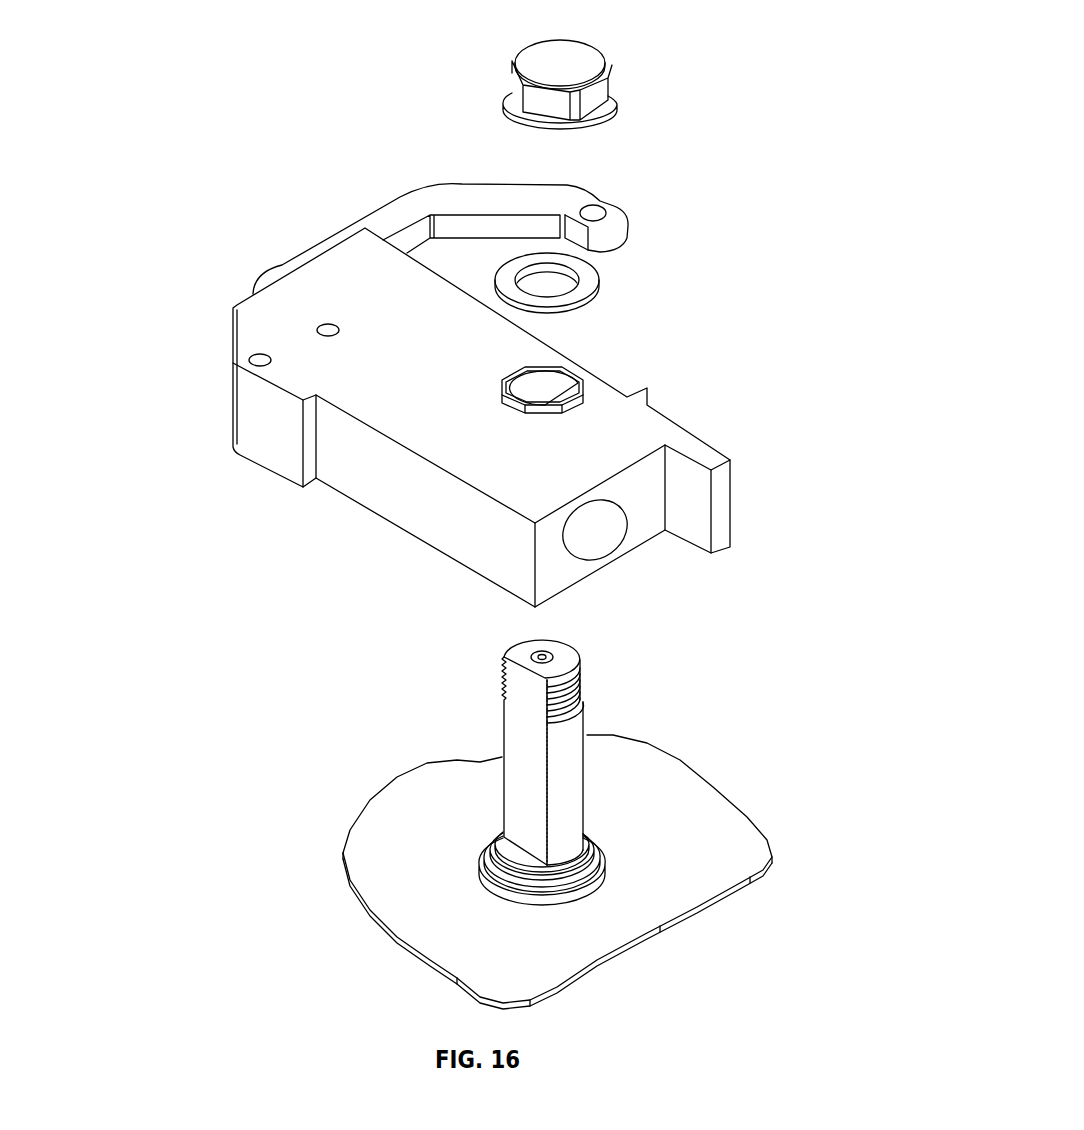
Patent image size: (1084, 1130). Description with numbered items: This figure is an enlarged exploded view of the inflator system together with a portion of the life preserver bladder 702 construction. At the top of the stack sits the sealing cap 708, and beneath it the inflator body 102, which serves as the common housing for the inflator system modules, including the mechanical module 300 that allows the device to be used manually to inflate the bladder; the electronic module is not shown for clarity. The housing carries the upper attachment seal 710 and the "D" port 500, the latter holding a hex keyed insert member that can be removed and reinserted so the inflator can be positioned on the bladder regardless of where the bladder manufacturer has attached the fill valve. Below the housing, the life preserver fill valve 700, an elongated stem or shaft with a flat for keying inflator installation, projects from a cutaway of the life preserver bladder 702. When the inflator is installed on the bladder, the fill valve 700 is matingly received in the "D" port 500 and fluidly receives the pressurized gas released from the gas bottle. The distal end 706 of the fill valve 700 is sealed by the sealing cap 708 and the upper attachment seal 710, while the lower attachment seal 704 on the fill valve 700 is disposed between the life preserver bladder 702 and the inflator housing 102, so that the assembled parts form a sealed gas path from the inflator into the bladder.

The inflator body 102 is at (407, 517).
The mechanical module 300 is at (345, 268).
The "D" port 500 is at (547, 390).
The life preserver fill valve 700 is at (512, 778).
The life preserver bladder 702 is at (652, 780).
The lower attachment seal 704 is at (590, 847).
The distal end 706 is at (521, 653).
The sealing cap 708 is at (580, 53).
The upper attachment seal 710 is at (591, 290).